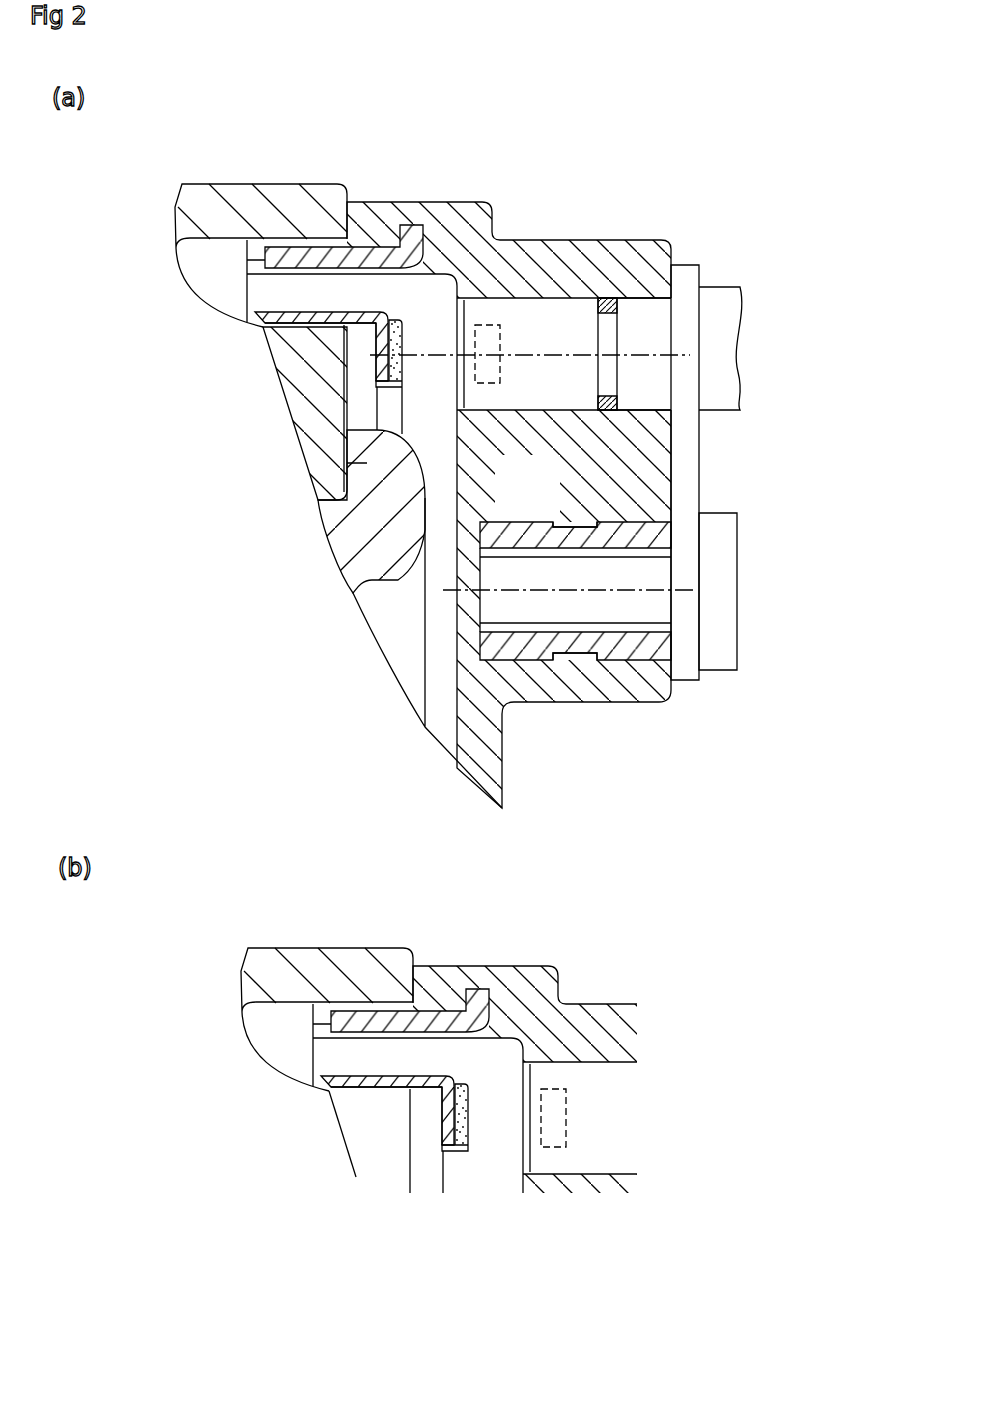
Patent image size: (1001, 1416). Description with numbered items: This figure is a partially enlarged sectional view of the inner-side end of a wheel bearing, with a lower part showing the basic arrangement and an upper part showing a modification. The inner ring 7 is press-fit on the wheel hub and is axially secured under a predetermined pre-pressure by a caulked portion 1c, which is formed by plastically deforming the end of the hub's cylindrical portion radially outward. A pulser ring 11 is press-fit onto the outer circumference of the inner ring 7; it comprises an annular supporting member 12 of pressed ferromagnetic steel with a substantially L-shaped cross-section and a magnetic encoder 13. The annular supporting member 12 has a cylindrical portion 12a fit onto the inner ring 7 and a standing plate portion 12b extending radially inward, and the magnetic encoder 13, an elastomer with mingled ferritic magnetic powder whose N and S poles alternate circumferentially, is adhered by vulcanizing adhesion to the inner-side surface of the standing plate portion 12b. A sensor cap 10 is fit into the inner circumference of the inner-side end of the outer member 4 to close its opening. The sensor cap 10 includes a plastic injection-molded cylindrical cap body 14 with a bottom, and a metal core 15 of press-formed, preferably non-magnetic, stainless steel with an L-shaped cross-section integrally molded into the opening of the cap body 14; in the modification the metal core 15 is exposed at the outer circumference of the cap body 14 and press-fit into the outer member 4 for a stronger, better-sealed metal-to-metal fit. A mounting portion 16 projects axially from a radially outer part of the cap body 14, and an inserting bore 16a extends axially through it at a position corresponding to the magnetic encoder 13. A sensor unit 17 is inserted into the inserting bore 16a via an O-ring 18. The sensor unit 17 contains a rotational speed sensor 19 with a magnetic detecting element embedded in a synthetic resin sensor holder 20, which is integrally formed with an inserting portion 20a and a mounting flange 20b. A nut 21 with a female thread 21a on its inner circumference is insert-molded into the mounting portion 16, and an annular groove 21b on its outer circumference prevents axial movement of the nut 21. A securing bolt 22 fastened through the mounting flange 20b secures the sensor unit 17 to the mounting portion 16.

The caulked portion 1c is at (307, 492).
The outer member 4 is at (245, 208).
The inner ring 7 is at (278, 341).
The sensor cap 10 is at (450, 110).
The pulser ring 11 is at (128, 398).
The annular supporting member 12 is at (176, 372).
The cylindrical portion 12a is at (372, 328).
The standing plate portion 12b is at (376, 369).
The magnetic encoder 13 is at (376, 392).
The cap body 14 is at (460, 232).
The metal core 15 is at (358, 247).
The mounting portion 16 is at (538, 262).
The inserting bore 16a is at (515, 390).
The sensor unit 17 is at (750, 289).
The O-ring 18 is at (602, 298).
The rotational speed sensor 19 is at (493, 340).
The sensor holder 20 is at (712, 183).
The inserting portion 20a is at (632, 317).
The mounting flange 20b is at (685, 293).
The nut 21 is at (613, 652).
The female thread 21a is at (518, 550).
The annular groove 21b is at (563, 657).
The securing bolt 22 is at (718, 542).